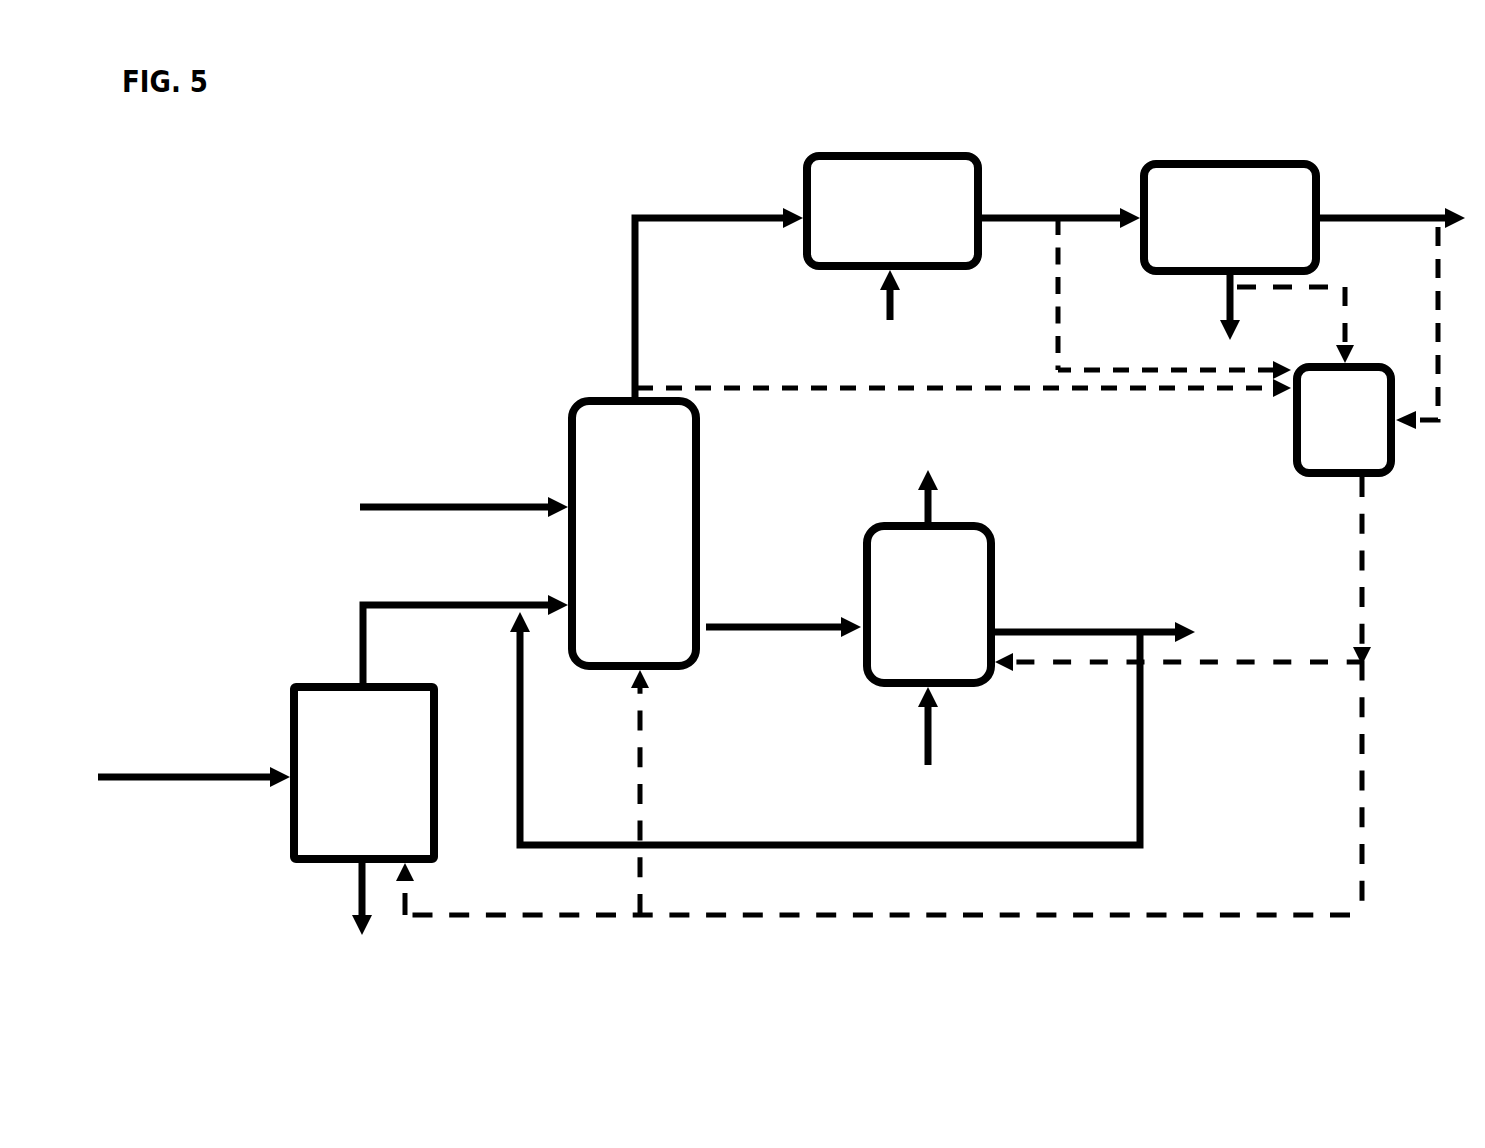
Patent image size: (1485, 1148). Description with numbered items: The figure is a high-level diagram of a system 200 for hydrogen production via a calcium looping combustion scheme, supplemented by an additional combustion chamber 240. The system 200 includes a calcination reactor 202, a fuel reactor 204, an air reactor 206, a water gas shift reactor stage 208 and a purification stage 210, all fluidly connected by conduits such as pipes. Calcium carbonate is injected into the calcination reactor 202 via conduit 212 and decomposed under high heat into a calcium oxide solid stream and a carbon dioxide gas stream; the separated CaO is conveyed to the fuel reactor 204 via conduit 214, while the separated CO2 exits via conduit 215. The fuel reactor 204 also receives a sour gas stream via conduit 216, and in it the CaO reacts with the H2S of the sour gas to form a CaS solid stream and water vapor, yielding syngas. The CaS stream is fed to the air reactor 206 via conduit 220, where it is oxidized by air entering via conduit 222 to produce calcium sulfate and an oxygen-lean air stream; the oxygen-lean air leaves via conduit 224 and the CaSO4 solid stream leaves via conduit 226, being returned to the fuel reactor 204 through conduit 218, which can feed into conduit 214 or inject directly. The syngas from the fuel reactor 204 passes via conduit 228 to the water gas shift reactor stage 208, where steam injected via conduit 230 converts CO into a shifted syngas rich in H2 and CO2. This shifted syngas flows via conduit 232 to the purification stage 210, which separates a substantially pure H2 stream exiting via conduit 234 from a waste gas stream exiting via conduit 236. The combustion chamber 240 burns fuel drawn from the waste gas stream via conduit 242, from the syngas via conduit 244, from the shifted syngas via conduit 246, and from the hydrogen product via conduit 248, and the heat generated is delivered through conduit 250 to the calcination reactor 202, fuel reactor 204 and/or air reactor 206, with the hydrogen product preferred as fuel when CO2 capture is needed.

The system 200 is at (360, 216).
The calcination reactor 202 is at (300, 683).
The fuel reactor 204 is at (700, 483).
The air reactor 206 is at (873, 522).
The water gas shift reactor stage 208 is at (852, 155).
The purification stage 210 is at (1225, 163).
The conduit 212 is at (195, 770).
The conduit 214 is at (400, 602).
The conduit 215 is at (358, 885).
The conduit 216 is at (478, 503).
The conduit 218 is at (800, 843).
The conduit 220 is at (755, 633).
The conduit 222 is at (935, 728).
The conduit 224 is at (933, 503).
The conduit 226 is at (1060, 627).
The conduit 228 is at (632, 302).
The conduit 230 is at (885, 302).
The conduit 232 is at (1027, 213).
The conduit 234 is at (1360, 216).
The conduit 236 is at (1225, 307).
The combustion chamber 240 is at (1293, 443).
The conduit 242 is at (1350, 293).
The conduit 244 is at (730, 360).
The conduit 246 is at (1058, 292).
The conduit 248 is at (1438, 428).
The conduit 250 is at (1363, 523).